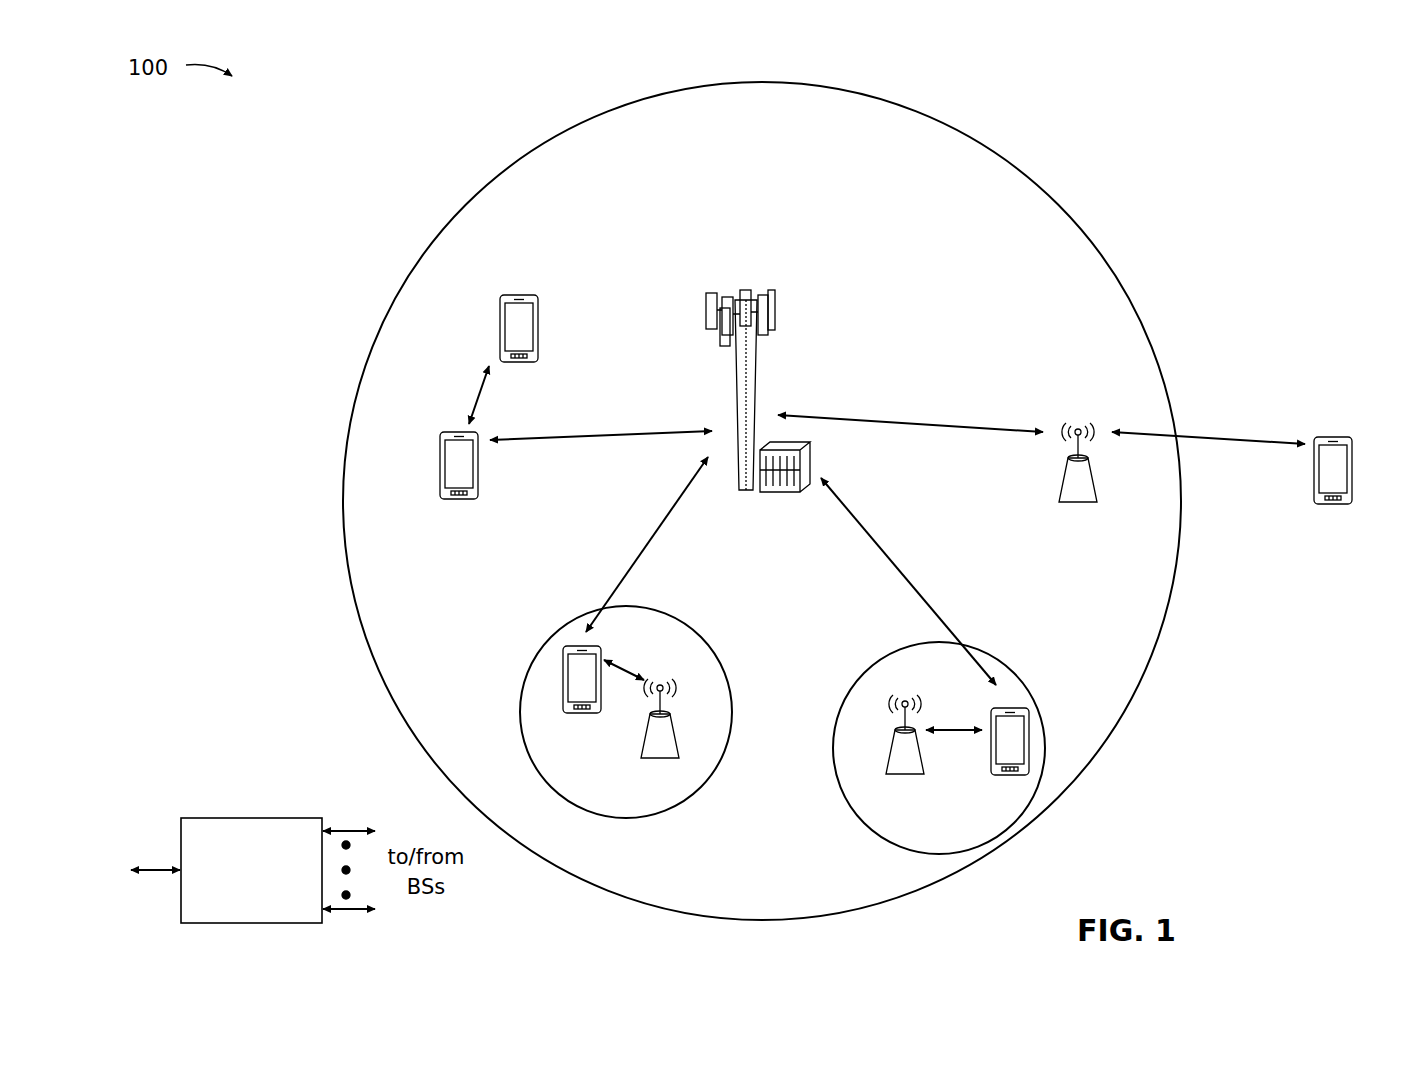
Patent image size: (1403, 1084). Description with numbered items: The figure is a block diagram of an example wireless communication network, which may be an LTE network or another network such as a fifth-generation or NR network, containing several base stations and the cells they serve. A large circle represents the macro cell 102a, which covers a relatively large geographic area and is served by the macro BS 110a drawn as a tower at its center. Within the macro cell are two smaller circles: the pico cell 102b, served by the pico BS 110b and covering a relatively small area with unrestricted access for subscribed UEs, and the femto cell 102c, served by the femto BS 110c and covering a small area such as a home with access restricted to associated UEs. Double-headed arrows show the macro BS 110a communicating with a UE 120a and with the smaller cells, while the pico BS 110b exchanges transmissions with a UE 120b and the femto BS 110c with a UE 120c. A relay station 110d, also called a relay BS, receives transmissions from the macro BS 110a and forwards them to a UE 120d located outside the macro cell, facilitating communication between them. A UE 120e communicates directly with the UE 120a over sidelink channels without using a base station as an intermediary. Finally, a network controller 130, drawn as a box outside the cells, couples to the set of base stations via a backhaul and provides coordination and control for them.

The macro cell 102a is at (1046, 186).
The pico cell 102b is at (716, 652).
The femto cell 102c is at (877, 658).
The macro BS 110a is at (753, 283).
The pico BS 110b is at (684, 742).
The femto BS 110c is at (886, 760).
The relay station 110d is at (1080, 424).
The UE 120a is at (438, 452).
The UE 120b is at (566, 714).
The UE 120c is at (995, 776).
The UE 120d is at (1346, 436).
The UE 120e is at (500, 318).
The network controller 130 is at (250, 816).